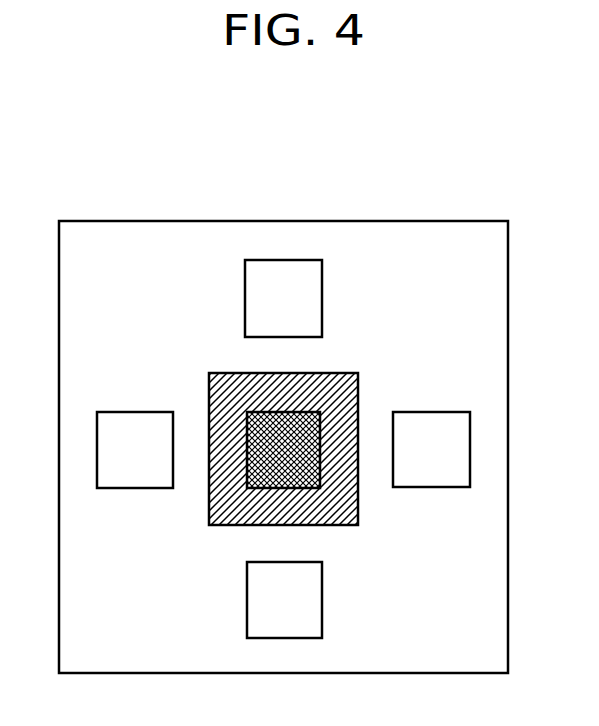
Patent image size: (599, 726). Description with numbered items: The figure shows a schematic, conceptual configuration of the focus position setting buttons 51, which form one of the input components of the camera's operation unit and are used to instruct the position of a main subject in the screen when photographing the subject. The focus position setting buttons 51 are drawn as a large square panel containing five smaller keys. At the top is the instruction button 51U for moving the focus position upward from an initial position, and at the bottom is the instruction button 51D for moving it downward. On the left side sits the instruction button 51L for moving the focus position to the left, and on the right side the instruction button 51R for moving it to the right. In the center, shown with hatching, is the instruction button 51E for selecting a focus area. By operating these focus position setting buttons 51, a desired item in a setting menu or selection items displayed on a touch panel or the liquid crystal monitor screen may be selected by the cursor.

The focus position setting buttons 51 is at (449, 221).
The instruction button 51U is at (245, 292).
The instruction button 51L is at (143, 412).
The instruction button 51R is at (440, 412).
The instruction button 51D is at (247, 580).
The instruction button 51E is at (353, 525).